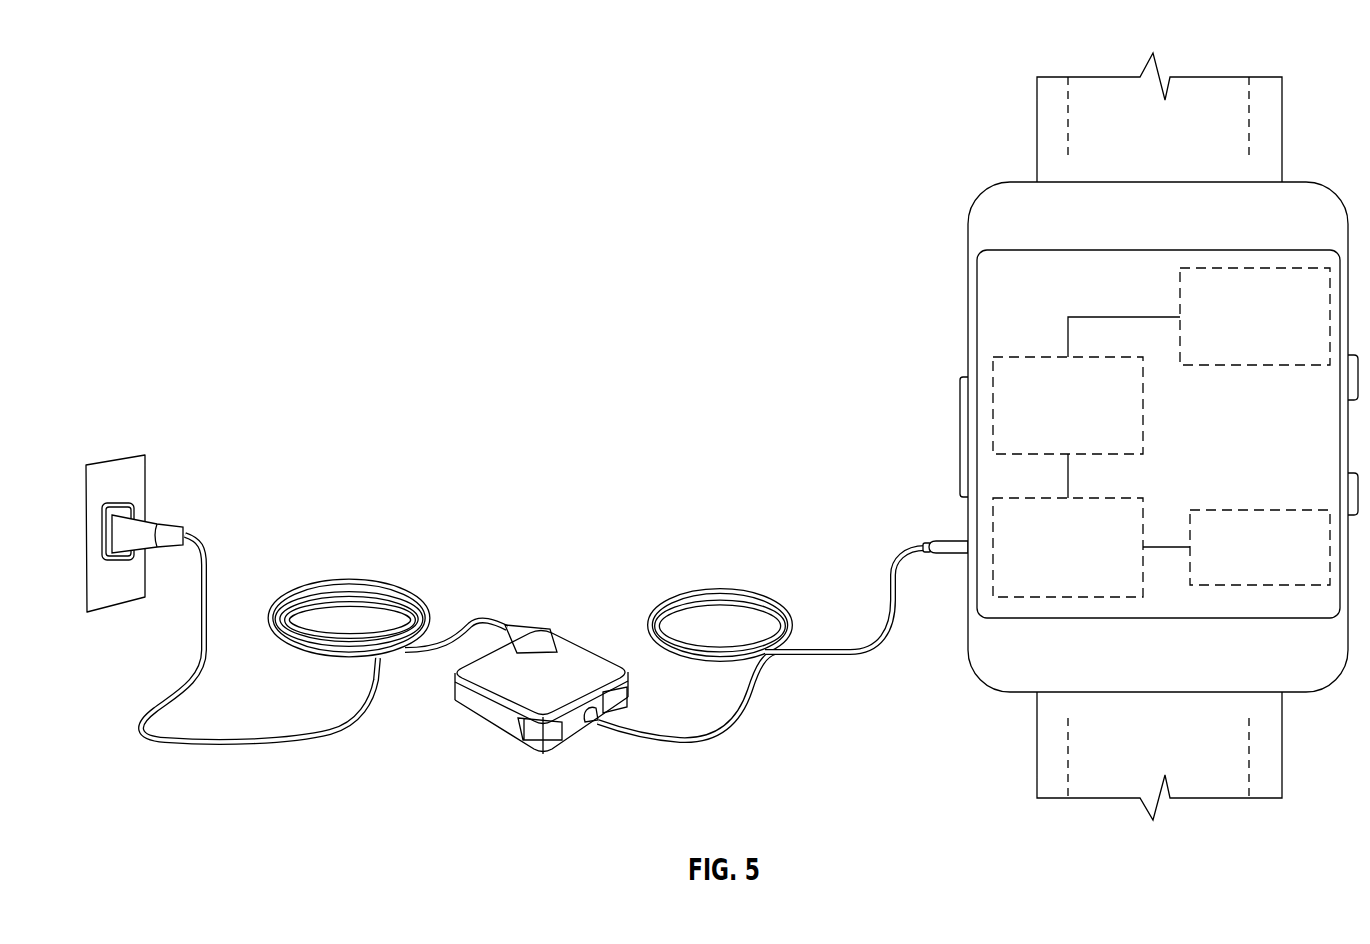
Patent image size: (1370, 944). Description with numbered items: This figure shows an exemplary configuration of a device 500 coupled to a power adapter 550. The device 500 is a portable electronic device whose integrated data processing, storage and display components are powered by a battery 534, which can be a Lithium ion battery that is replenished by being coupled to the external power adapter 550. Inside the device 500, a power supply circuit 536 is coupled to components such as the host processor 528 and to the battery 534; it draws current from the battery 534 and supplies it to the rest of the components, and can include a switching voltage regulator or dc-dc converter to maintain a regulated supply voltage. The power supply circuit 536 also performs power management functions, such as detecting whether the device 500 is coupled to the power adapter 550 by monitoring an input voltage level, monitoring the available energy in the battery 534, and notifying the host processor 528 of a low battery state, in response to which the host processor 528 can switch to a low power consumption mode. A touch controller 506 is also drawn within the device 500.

The device 500 is at (1002, 78).
The touch controller 506 is at (1178, 306).
The host processor 528 is at (1145, 388).
The battery 534 is at (1282, 508).
The power supply circuit 536 is at (1145, 514).
The power adapter 550 is at (580, 662).